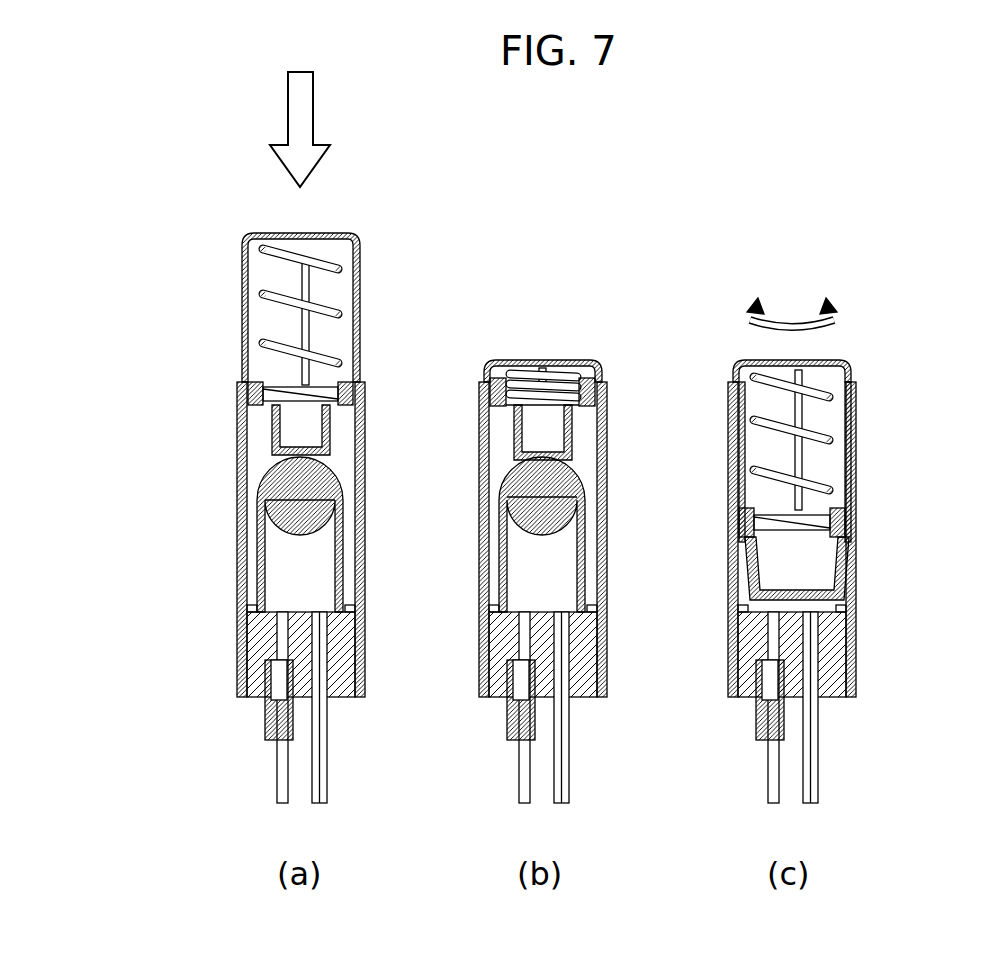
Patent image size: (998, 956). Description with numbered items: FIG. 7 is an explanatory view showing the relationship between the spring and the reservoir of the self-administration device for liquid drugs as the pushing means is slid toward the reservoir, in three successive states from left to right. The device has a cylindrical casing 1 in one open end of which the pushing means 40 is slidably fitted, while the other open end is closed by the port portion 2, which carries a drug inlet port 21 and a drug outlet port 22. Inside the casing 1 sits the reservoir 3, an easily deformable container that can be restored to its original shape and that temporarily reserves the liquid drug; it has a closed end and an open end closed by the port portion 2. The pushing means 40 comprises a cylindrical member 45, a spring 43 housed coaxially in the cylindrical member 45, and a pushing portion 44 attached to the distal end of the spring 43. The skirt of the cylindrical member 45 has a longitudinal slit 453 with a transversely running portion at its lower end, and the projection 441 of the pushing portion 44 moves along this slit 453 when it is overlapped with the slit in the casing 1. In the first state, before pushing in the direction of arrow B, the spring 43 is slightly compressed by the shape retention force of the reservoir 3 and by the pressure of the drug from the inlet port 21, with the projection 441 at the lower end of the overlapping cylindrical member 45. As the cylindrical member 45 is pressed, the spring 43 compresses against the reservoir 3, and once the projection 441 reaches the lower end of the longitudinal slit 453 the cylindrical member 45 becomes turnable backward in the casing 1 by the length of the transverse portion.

The pressing direction B is at (313, 125).
The casing 1 is at (237, 560).
The port portion 2 is at (365, 655).
The drug inlet port 21 is at (322, 634).
The drug outlet port 22 is at (288, 632).
The reservoir 3 is at (345, 542).
The pushing means 40 is at (556, 377).
The spring 43 is at (242, 298).
The pushing portion 44 is at (332, 428).
The cylindrical member 45 is at (360, 262).
The projection 441 is at (244, 408).
The longitudinal slit 453 is at (812, 458).